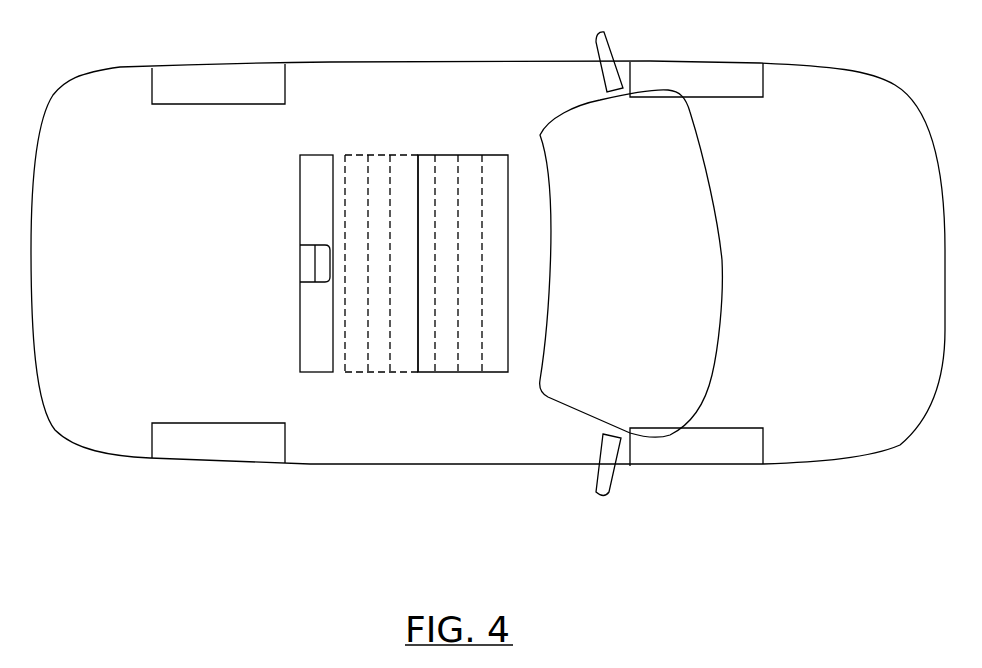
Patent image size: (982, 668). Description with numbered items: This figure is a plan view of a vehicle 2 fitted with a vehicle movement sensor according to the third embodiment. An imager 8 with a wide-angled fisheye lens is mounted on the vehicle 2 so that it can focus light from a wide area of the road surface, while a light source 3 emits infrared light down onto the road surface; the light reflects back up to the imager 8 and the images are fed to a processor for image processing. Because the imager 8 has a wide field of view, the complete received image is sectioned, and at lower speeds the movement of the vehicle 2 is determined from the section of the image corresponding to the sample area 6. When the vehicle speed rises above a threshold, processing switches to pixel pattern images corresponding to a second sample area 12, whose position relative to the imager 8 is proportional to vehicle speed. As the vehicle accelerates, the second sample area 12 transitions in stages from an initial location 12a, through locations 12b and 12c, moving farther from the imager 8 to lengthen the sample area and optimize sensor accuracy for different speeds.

The vehicle 2 is at (82, 76).
The light source 3 is at (322, 272).
The sample area 6 is at (321, 155).
The imager 8 is at (307, 267).
The second sample area 12 is at (424, 267).
The initial location of second sample area 12a is at (352, 365).
The intermediate location of second sample area 12b is at (379, 365).
The further location of second sample area 12c is at (412, 365).